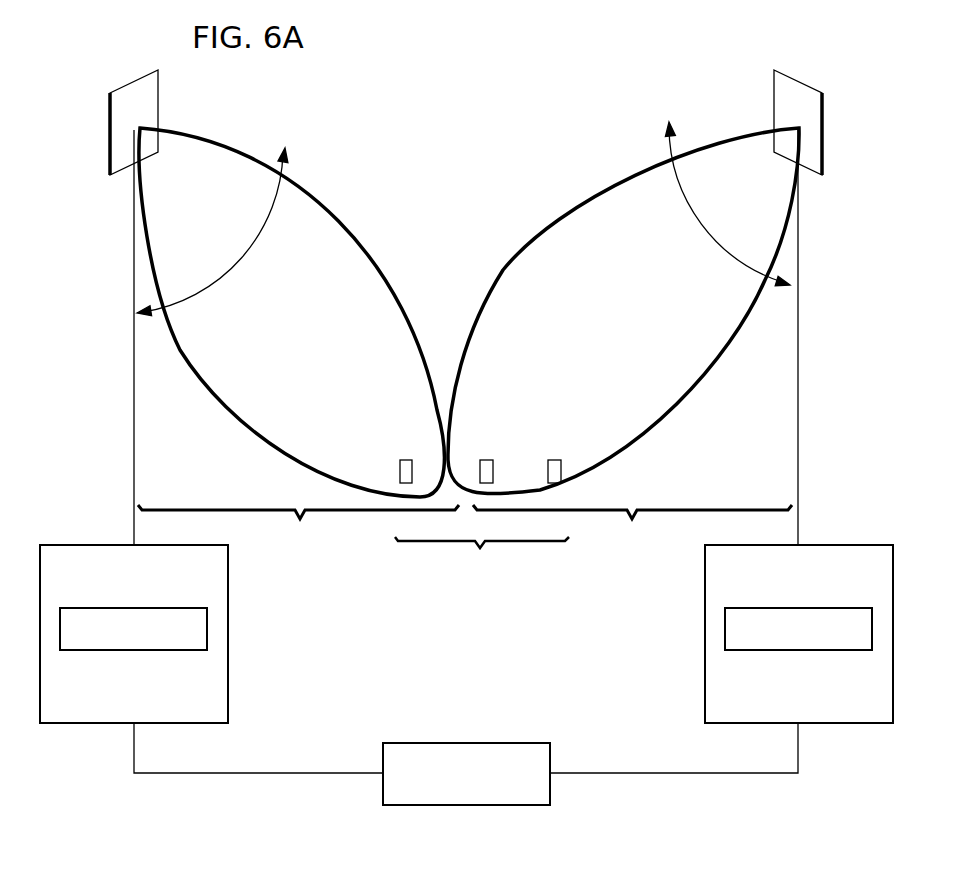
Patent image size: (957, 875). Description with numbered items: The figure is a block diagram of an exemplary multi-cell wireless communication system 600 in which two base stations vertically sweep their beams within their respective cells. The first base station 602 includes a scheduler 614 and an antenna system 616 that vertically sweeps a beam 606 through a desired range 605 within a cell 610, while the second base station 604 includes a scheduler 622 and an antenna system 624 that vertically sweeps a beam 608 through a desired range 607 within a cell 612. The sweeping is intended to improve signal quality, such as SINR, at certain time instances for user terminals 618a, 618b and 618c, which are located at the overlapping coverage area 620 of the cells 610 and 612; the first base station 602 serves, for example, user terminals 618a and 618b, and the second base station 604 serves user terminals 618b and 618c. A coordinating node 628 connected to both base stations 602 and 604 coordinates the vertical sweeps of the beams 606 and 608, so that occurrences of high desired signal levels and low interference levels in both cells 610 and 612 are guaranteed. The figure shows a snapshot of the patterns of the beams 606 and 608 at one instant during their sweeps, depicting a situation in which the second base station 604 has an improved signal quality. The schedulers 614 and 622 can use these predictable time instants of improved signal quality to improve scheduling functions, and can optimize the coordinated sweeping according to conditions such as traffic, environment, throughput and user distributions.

The multi-cell wireless communication system 600 is at (595, 82).
The first base station 602 is at (134, 661).
The second base station 604 is at (799, 661).
The desired range 605 is at (234, 266).
The beam 606 is at (351, 221).
The desired range 607 is at (701, 222).
The beam 608 is at (541, 223).
The cell 610 is at (298, 526).
The cell 612 is at (632, 526).
The scheduler 614 is at (125, 651).
The antenna system 616 is at (110, 134).
The user terminal 618a is at (405, 459).
The user terminal 618b is at (487, 459).
The user terminal 618c is at (556, 459).
The overlapping coverage area 620 is at (482, 558).
The scheduler 622 is at (808, 651).
The antenna system 624 is at (822, 134).
The coordinating node 628 is at (434, 806).